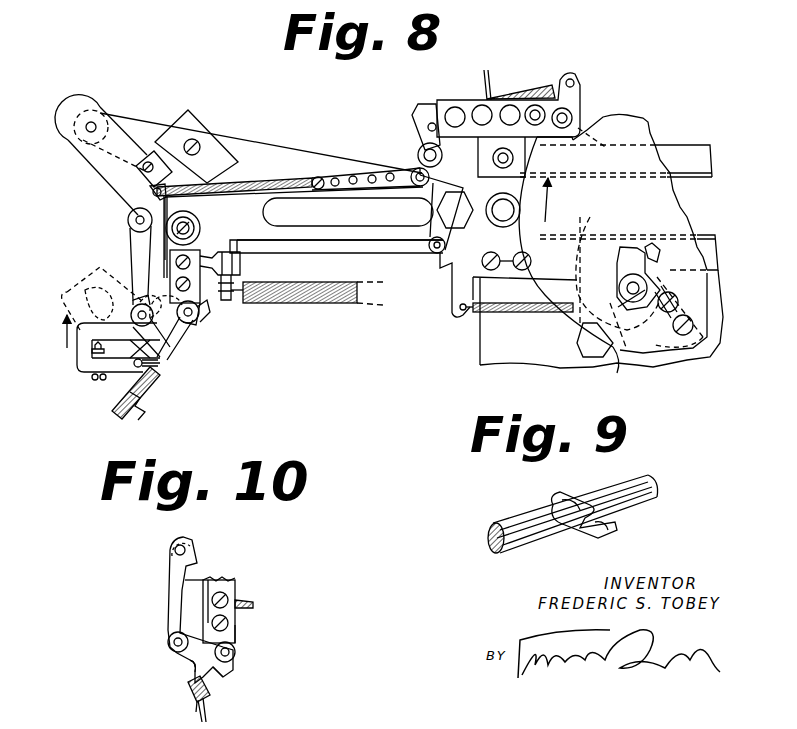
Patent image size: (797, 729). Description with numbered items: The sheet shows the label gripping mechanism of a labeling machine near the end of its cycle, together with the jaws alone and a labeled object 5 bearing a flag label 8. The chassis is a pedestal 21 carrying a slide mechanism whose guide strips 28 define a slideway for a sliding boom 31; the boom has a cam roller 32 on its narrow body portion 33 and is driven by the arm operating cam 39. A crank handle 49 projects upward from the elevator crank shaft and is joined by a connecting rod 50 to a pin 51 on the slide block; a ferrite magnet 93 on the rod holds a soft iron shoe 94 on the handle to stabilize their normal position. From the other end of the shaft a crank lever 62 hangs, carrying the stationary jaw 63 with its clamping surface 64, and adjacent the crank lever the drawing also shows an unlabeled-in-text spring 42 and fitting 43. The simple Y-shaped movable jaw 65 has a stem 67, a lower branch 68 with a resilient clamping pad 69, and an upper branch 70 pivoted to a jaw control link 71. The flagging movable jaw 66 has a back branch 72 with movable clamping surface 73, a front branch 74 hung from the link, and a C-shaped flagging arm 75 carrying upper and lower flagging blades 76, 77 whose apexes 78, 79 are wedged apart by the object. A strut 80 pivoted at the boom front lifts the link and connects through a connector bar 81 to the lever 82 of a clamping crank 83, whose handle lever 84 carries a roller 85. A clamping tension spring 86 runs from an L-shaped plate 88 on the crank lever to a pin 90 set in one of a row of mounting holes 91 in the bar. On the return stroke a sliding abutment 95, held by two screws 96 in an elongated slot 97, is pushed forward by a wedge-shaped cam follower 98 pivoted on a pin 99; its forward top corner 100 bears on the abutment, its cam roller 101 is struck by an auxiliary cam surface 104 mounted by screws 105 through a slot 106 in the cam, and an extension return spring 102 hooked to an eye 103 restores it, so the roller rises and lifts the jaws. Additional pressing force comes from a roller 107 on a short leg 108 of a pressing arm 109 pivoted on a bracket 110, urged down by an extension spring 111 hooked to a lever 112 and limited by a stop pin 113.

In FIG. 8, the object 5 is at (118, 396).
In FIG. 9, the object 5 is at (625, 480).
In FIG. 8, the label 8 is at (150, 376).
In FIG. 9, the label 8 is at (615, 525).
In FIG. 10, the label 8 is at (208, 716).
In FIG. 8, the pedestal 21 is at (726, 303).
In FIG. 8, the guide strips 28 is at (722, 253).
In FIG. 8, the sliding boom 31 is at (352, 255).
In FIG. 8, the cam roller 32 is at (517, 205).
In FIG. 8, the body portion 33 is at (320, 243).
In FIG. 8, the arm operating cam 39 is at (645, 115).
In FIG. 8, the spring 42 is at (350, 305).
In FIG. 8, the rod 43 is at (230, 300).
In FIG. 8, the crank handle 49 is at (68, 137).
In FIG. 8, the connecting rod 50 is at (293, 148).
In FIG. 8, the pin 51 is at (91, 122).
In FIG. 8, the crank lever 62 is at (200, 300).
In FIG. 10, the crank lever 62 is at (235, 583).
In FIG. 8, the stationary label clamping jaw 63 is at (200, 326).
In FIG. 10, the stationary label clamping jaw 63 is at (237, 633).
In FIG. 8, the label clamping surface 64 is at (168, 362).
In FIG. 10, the label clamping surface 64 is at (225, 679).
In FIG. 10, the movable jaw 65 is at (182, 674).
In FIG. 8, the flagging movable jaw 66 is at (75, 368).
In FIG. 10, the stem 67 is at (235, 646).
In FIG. 10, the lower branch 68 is at (188, 693).
In FIG. 10, the clamping pad 69 is at (190, 707).
In FIG. 10, the upper branch 70 is at (170, 652).
In FIG. 8, the jaw control link 71 is at (130, 228).
In FIG. 10, the jaw control link 71 is at (168, 566).
In FIG. 8, the back branch 72 is at (175, 345).
In FIG. 8, the movable clamping surface 73 is at (170, 365).
In FIG. 8, the front branch 74 is at (100, 289).
In FIG. 8, the flagging arm 75 is at (92, 343).
In FIG. 8, the upper flagging blade 76 is at (67, 332).
In FIG. 8, the lower flagging blade 77 is at (95, 383).
In FIG. 8, the apex 78 is at (165, 306).
In FIG. 8, the apex 79 is at (156, 395).
In FIG. 8, the strut member 80 is at (150, 192).
In FIG. 10, the strut member 80 is at (195, 537).
In FIG. 8, the connector bar 81 is at (395, 177).
In FIG. 8, the lever 82 is at (445, 183).
In FIG. 8, the clamping crank 83 is at (433, 208).
In FIG. 8, the handle lever 84 is at (430, 232).
In FIG. 8, the roller 85 is at (437, 210).
In FIG. 8, the clamping tension spring 86 is at (245, 186).
In FIG. 8, the L-shaped plate 88 is at (164, 245).
In FIG. 10, the L-shaped plate 88 is at (203, 600).
In FIG. 8, the pin 90 is at (318, 177).
In FIG. 8, the mounting holes 91 is at (370, 178).
In FIG. 8, the ferrite magnet 93 is at (195, 123).
In FIG. 8, the soft iron shoe 94 is at (148, 160).
In FIG. 8, the sliding abutment 95 is at (440, 260).
In FIG. 8, the screws 96 is at (507, 250).
In FIG. 8, the elongated slot 97 is at (508, 275).
In FIG. 8, the cam follower 98 is at (578, 330).
In FIG. 8, the pin 99 is at (617, 373).
In FIG. 8, the forward top corner 100 is at (594, 232).
In FIG. 8, the cam roller 101 is at (636, 273).
In FIG. 8, the extension return spring 102 is at (515, 313).
In FIG. 8, the eye 103 is at (458, 320).
In FIG. 8, the auxiliary radial cam surface 104 is at (657, 250).
In FIG. 8, the screws 105 is at (673, 325).
In FIG. 8, the slot 106 is at (665, 275).
In FIG. 8, the roller 107 is at (420, 150).
In FIG. 8, the leg 108 is at (425, 102).
In FIG. 8, the pressing arm 109 is at (445, 100).
In FIG. 8, the bracket 110 is at (587, 130).
In FIG. 8, the extension spring 111 is at (528, 92).
In FIG. 8, the lever 112 is at (570, 78).
In FIG. 8, the stop pin 113 is at (418, 108).